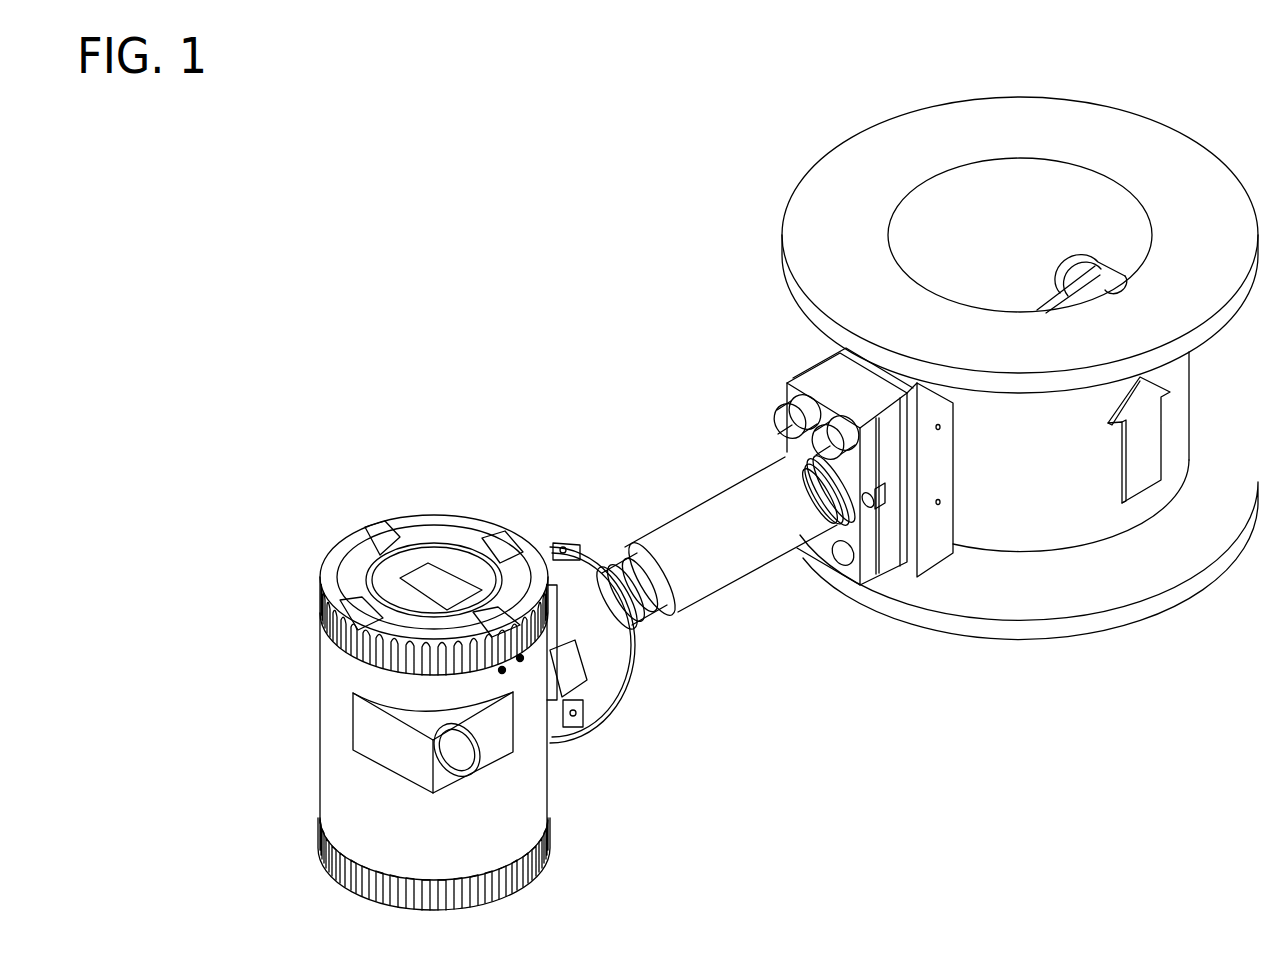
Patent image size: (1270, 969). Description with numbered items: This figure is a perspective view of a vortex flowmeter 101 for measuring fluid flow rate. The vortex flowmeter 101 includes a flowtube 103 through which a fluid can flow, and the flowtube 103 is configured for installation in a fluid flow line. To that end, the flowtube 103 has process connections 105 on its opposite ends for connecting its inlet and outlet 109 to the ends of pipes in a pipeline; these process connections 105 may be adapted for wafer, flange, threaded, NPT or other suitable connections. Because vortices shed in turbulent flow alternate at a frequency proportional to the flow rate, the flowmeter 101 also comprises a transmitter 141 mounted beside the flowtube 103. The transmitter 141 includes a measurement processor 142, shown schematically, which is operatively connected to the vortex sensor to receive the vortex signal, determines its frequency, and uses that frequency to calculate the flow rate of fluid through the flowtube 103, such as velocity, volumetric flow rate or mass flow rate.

The vortex flowmeter 101 is at (445, 246).
The flowtube 103 is at (793, 346).
The process connections 105 is at (828, 192).
The outlet 109 is at (978, 225).
The transmitter 141 is at (335, 528).
The measurement processor 142 is at (438, 580).